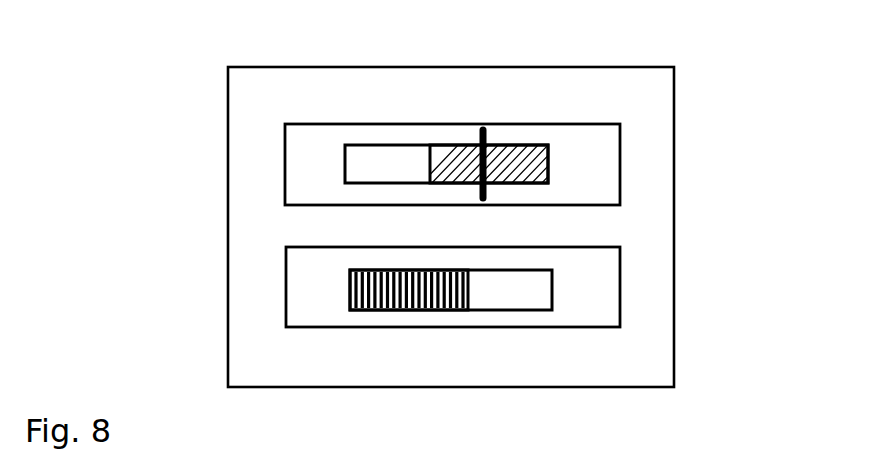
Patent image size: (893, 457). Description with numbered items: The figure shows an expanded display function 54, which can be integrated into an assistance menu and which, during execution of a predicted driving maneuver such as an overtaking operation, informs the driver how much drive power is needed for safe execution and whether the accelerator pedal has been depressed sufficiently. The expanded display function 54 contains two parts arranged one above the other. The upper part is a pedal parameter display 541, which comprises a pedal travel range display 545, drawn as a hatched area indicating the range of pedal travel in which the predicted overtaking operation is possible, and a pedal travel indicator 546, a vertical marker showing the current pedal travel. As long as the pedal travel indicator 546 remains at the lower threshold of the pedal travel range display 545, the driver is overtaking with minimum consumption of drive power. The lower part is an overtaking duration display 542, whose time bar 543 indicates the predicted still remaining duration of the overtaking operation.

The expanded display function 54 is at (674, 218).
The pedal parameter display 541 is at (600, 123).
The overtaking duration display 542 is at (620, 282).
The time bar 543 is at (398, 310).
The pedal travel range display 545 is at (512, 160).
The pedal travel indicator 546 is at (483, 130).